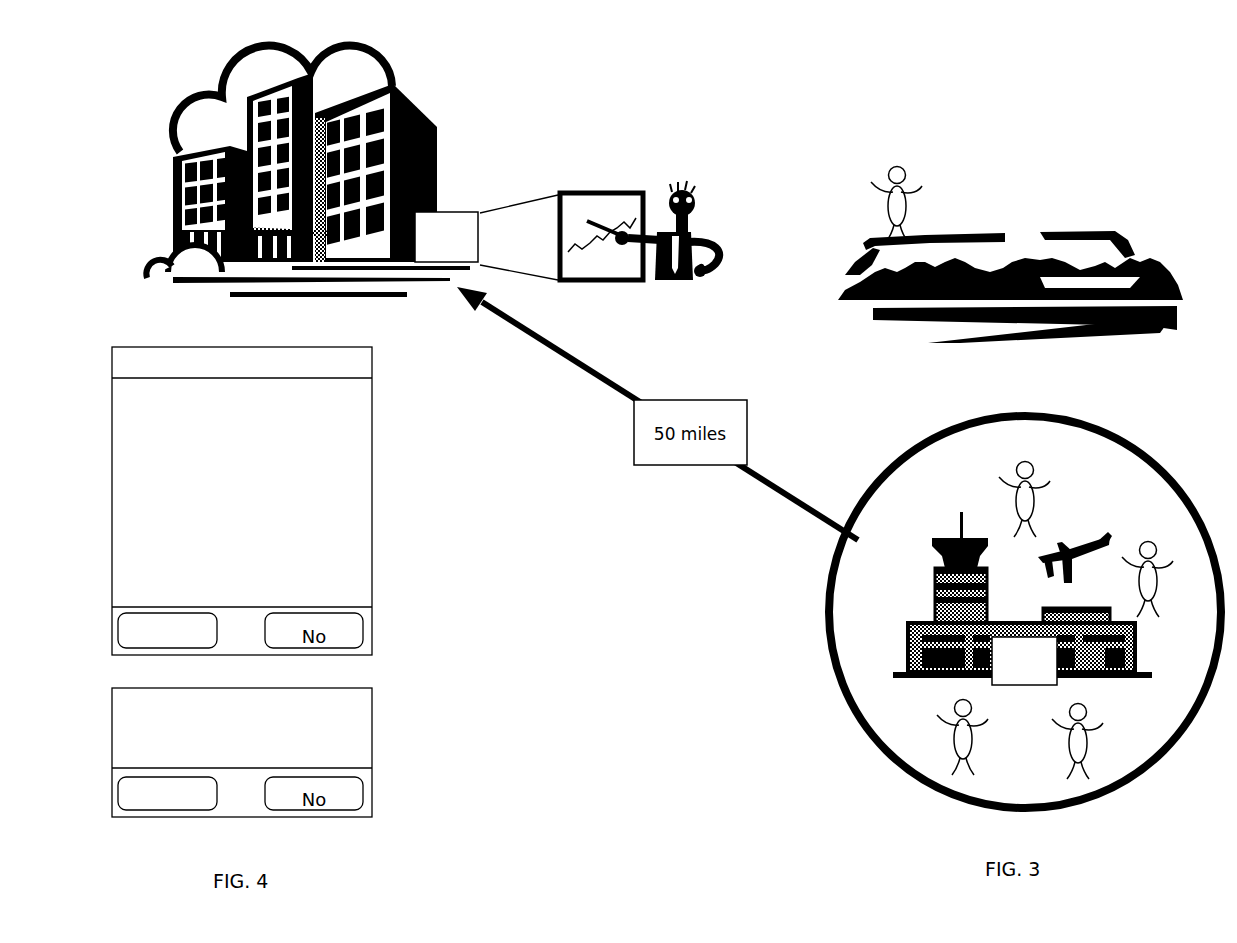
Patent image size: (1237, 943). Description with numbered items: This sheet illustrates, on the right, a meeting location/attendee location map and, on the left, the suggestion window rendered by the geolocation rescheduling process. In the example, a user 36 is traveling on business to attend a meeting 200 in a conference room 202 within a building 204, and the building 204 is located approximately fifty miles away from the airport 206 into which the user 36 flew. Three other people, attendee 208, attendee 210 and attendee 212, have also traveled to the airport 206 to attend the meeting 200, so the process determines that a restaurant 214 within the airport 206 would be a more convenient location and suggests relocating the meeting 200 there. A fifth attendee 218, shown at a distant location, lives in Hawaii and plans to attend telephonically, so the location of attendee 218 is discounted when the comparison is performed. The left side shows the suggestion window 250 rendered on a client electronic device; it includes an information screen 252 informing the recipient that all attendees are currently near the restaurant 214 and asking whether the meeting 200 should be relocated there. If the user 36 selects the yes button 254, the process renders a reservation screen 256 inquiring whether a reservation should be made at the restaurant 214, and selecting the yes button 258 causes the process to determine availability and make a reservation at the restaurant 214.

In FIG. 3, the user 36 is at (1043, 477).
In FIG. 3, the meeting 200 is at (560, 222).
In FIG. 3, the conference room 202 is at (446, 237).
In FIG. 3, the building 204 is at (437, 129).
In FIG. 3, the airport 206 is at (932, 597).
In FIG. 3, the attendee 208 is at (1096, 719).
In FIG. 3, the attendee 210 is at (981, 715).
In FIG. 3, the attendee 212 is at (1166, 557).
In FIG. 3, the restaurant 214 is at (1022, 646).
In FIG. 3, the attendee 218 is at (915, 181).
In FIG. 4, the suggestion window 250 is at (242, 501).
In FIG. 4, the information screen 252 is at (362, 492).
In FIG. 4, the yes button 254 is at (120, 631).
In FIG. 4, the reservation screen 256 is at (362, 732).
In FIG. 4, the yes button 258 is at (120, 794).